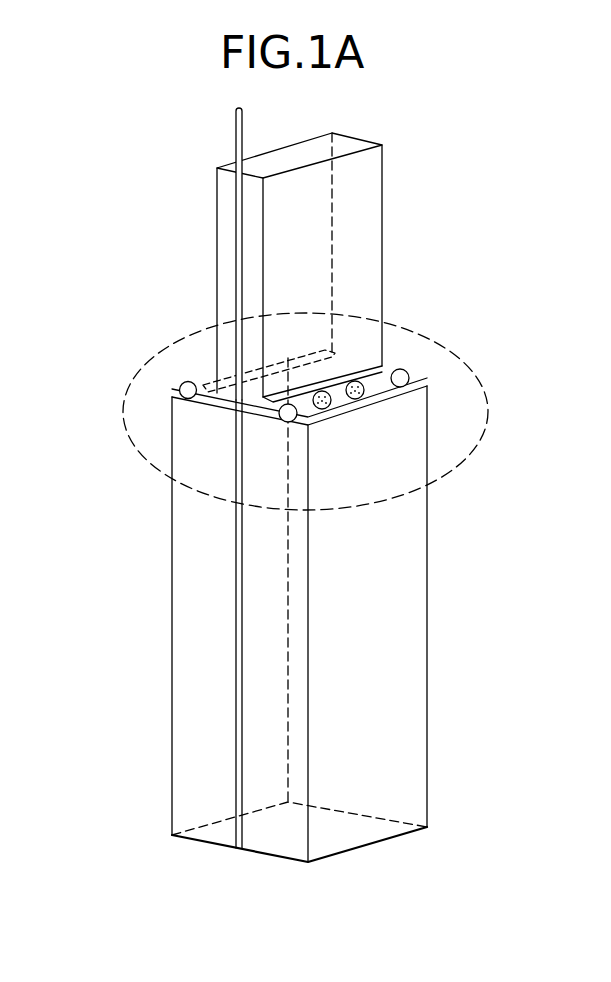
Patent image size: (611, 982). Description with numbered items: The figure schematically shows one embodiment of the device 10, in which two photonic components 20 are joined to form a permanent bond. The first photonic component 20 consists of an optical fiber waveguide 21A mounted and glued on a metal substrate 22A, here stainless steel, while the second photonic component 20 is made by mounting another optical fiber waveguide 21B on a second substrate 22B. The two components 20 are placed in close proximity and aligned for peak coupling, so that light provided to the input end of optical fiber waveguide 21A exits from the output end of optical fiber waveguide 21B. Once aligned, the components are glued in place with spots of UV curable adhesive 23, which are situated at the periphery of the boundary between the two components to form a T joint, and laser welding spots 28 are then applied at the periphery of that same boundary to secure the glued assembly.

The device 10 is at (218, 92).
The photonic component 20 is at (197, 258).
The optical fiber waveguide 21A is at (250, 128).
The optical fiber waveguide 21B is at (230, 657).
The metal substrate 22A is at (392, 192).
The substrate 22B is at (445, 769).
The adhesive spot 23 is at (268, 424).
The welding spot 28 is at (338, 418).